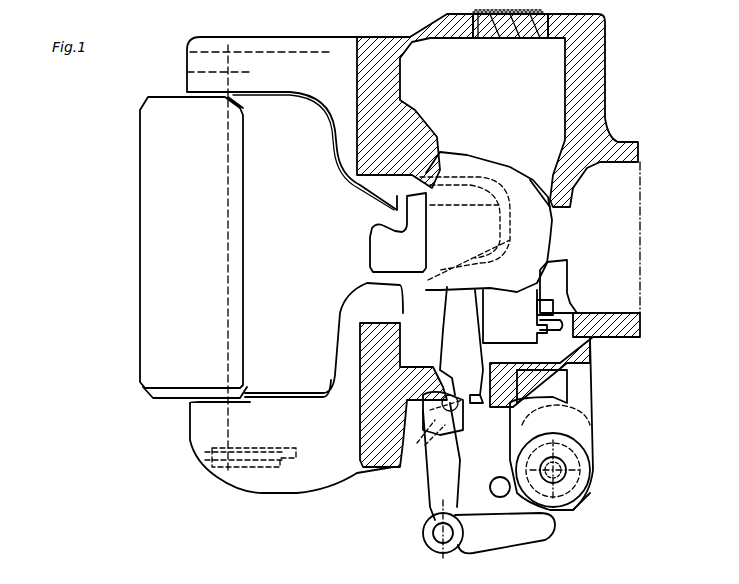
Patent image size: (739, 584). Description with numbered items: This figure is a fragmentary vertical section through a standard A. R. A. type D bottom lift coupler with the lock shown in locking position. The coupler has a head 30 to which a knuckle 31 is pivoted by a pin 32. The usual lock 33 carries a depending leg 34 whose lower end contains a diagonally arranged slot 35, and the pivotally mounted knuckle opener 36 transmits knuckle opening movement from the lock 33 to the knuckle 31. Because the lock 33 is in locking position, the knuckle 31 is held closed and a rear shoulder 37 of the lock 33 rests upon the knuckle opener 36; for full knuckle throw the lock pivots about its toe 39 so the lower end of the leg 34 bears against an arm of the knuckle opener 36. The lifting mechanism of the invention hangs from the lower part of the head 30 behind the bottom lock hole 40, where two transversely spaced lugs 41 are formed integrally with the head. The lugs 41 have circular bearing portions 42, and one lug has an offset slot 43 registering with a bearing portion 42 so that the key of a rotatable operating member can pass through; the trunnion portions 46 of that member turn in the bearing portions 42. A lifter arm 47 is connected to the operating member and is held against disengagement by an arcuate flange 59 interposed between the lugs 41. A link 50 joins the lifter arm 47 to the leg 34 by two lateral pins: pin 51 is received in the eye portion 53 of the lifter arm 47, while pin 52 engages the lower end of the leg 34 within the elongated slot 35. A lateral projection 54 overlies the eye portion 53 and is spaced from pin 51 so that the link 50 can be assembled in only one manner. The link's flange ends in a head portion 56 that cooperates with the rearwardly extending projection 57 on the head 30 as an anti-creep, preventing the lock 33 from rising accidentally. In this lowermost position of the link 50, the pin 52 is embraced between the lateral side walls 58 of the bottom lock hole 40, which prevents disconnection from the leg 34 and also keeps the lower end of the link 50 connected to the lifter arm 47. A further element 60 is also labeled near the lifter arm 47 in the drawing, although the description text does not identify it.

The head 30 is at (393, 38).
The knuckle 31 is at (150, 190).
The pin 32 is at (190, 74).
The lock 33 is at (468, 162).
The depending leg 34 is at (470, 317).
The diagonally arranged slot 35 is at (447, 390).
The knuckle opener 36 is at (537, 307).
The rear shoulder 37 is at (523, 300).
The toe 39 is at (372, 228).
The bottom lock hole 40 is at (487, 403).
The lugs 41 is at (580, 384).
The circular bearing portions 42 is at (577, 503).
The offset slot 43 is at (583, 440).
The trunnion portions 46 is at (557, 468).
The lifter arm 47 is at (507, 523).
The link 50 is at (430, 483).
The pivotal pin 51 is at (443, 547).
The pivotal pin 52 is at (443, 399).
The eye portion 53 is at (423, 535).
The lateral projection 54 is at (417, 443).
The head portion 56 is at (463, 387).
The rearwardly extending projection 57 is at (370, 392).
The lateral side walls 58 is at (360, 458).
The arcuate flange 59 is at (583, 410).
The pin 60 is at (500, 480).